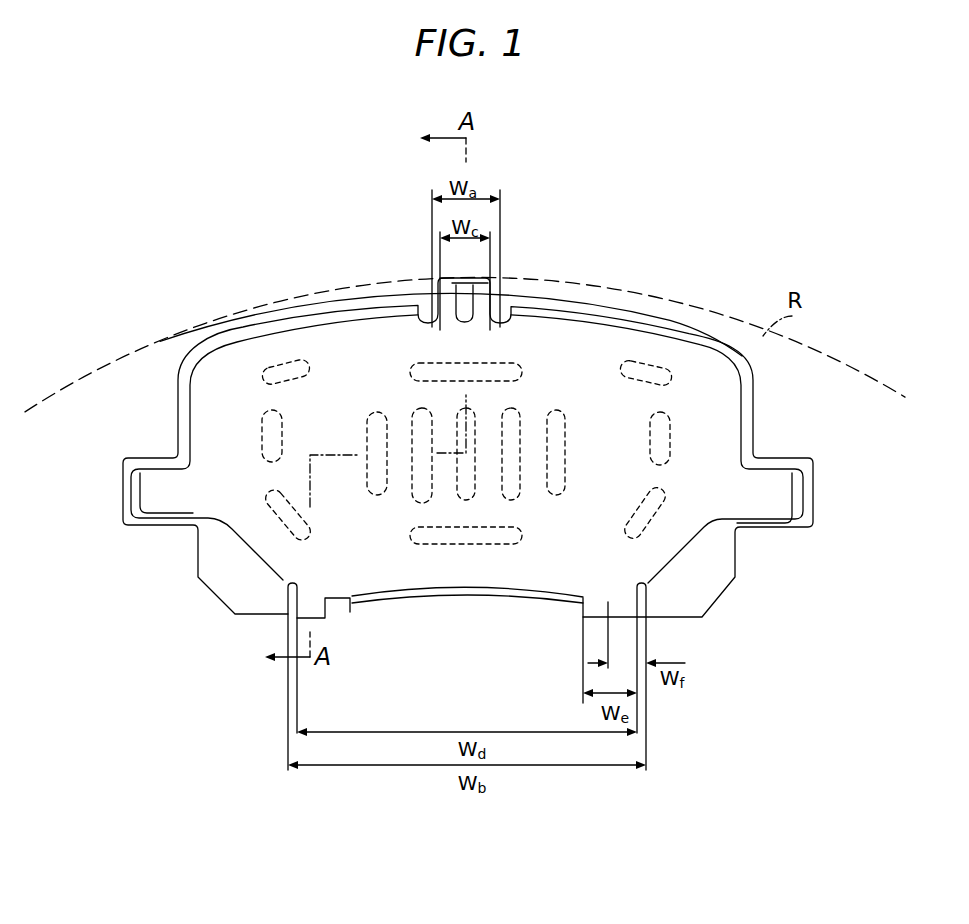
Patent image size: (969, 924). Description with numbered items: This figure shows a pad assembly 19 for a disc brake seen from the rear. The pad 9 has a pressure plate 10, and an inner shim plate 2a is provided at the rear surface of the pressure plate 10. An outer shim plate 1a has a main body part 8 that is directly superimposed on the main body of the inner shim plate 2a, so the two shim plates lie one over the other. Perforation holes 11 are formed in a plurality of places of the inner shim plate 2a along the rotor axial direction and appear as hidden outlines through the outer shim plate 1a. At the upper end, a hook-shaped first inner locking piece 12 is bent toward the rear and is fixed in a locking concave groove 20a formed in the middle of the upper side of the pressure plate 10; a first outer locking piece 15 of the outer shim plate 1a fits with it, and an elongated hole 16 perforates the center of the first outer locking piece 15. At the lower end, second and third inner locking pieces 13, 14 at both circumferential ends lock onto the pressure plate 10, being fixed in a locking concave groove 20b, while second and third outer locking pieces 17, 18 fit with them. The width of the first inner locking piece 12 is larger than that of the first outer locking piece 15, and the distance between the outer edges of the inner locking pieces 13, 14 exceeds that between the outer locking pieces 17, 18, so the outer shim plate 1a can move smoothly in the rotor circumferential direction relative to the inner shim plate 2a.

The outer shim plate 1a is at (592, 350).
The inner shim plate 2a is at (420, 297).
The main body part 8 is at (597, 497).
The pad 9 is at (762, 412).
The pressure plate 10 is at (712, 567).
The perforation holes 11 is at (367, 430).
The first inner locking piece 12 is at (426, 313).
The second inner locking piece 13 is at (340, 608).
The third inner locking piece 14 is at (583, 618).
The first outer locking piece 15 is at (478, 302).
The elongated hole 16 is at (482, 292).
The second outer locking piece 17 is at (297, 621).
The third outer locking piece 18 is at (646, 643).
The pad assembly 19 is at (836, 506).
The locking concave groove 20a is at (490, 327).
The locking concave groove 20b is at (648, 583).